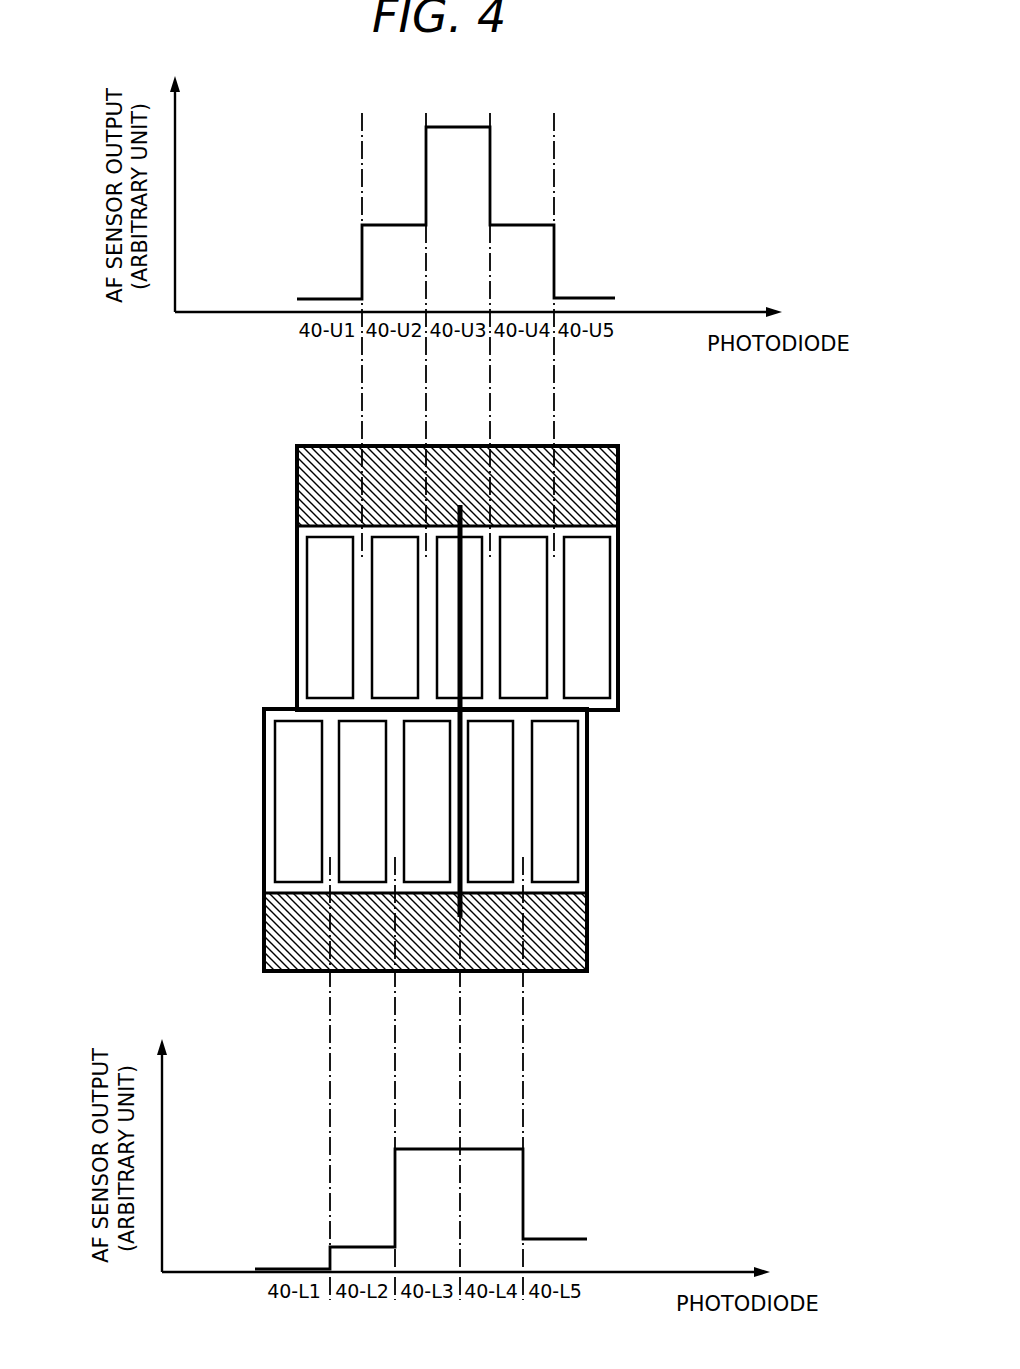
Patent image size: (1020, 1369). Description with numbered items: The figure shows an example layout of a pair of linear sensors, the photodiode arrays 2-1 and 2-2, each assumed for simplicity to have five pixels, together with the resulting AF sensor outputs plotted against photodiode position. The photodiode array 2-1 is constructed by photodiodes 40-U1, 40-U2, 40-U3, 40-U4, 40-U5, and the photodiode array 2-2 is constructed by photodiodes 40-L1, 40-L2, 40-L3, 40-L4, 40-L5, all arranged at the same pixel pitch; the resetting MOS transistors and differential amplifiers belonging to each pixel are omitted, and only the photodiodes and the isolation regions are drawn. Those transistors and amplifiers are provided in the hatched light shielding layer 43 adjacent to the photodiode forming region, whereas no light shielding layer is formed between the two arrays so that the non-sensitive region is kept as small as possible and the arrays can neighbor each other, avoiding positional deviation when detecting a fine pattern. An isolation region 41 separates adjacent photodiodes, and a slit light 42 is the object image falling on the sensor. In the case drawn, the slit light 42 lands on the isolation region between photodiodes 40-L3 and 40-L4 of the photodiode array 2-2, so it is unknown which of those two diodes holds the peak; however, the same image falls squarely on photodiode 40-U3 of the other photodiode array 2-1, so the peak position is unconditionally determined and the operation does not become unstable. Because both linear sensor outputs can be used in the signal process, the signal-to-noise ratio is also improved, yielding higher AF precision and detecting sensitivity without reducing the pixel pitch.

The photodiode array 2-1 is at (618, 605).
The photodiode array 2-2 is at (587, 738).
The photodiode 40-U1 is at (320, 637).
The photodiode 40-U2 is at (380, 607).
The photodiode 40-U3 is at (440, 570).
The photodiode 40-U4 is at (535, 664).
The photodiode 40-U5 is at (598, 548).
The photodiode 40-L1 is at (285, 740).
The photodiode 40-L2 is at (350, 785).
The photodiode 40-L3 is at (415, 825).
The photodiode 40-L4 is at (505, 828).
The photodiode 40-L5 is at (565, 792).
The isolation region 41 is at (587, 880).
The slit light 42 is at (460, 905).
The light shielding layer 43 is at (605, 463).